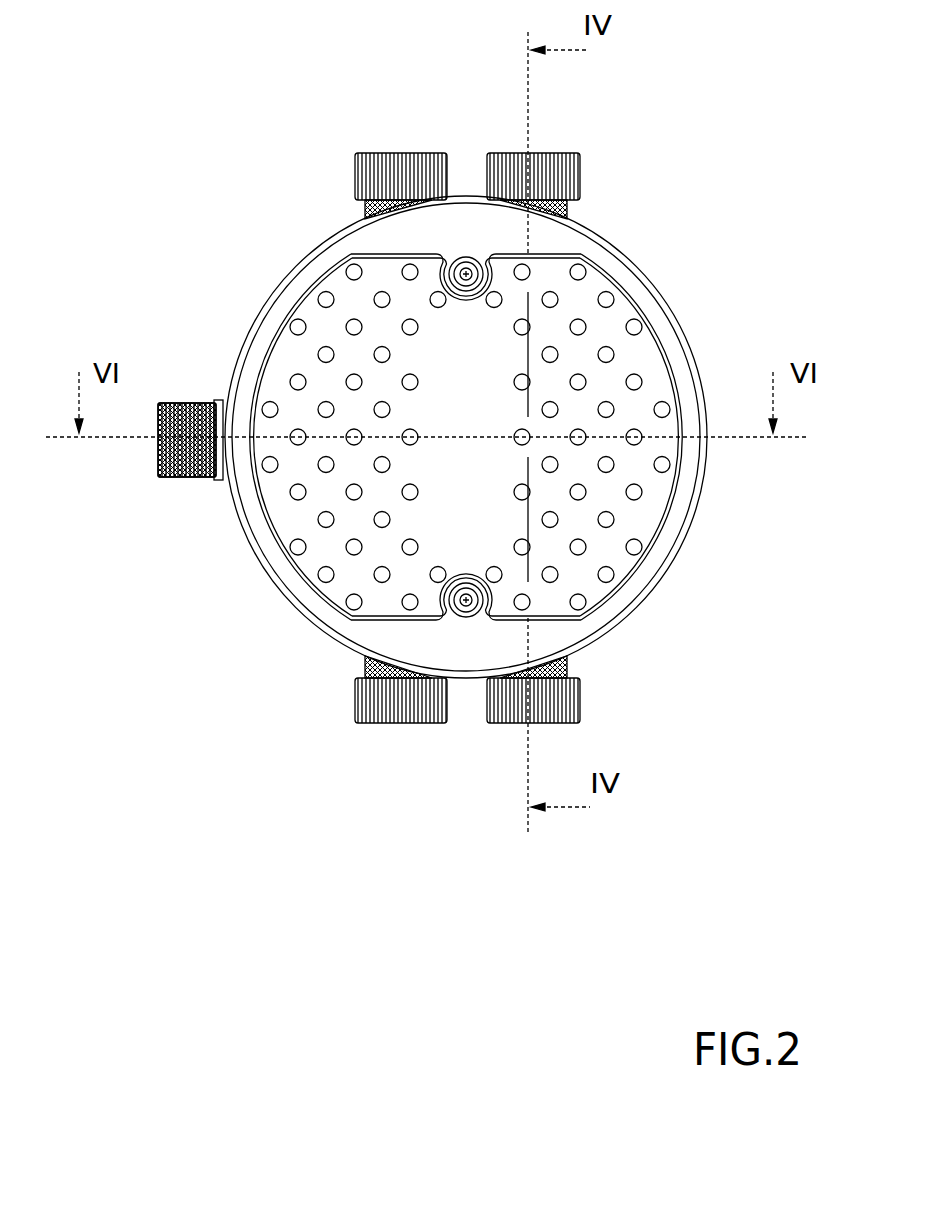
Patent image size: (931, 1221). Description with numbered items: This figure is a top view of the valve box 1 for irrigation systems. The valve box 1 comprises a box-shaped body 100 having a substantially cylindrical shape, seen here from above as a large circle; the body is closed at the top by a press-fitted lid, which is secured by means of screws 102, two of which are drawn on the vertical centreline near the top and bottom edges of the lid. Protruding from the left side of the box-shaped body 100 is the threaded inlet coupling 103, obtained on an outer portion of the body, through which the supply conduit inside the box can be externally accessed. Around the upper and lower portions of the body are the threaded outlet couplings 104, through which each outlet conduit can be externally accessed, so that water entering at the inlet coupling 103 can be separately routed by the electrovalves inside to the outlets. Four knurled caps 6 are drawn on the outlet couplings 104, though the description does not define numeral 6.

The valve box 1 is at (712, 316).
The knob 6 is at (398, 153).
The box-shaped body 100 is at (684, 545).
The screws 102 is at (466, 262).
The threaded inlet coupling 103 is at (157, 468).
The threaded outlet couplings 104 is at (368, 210).